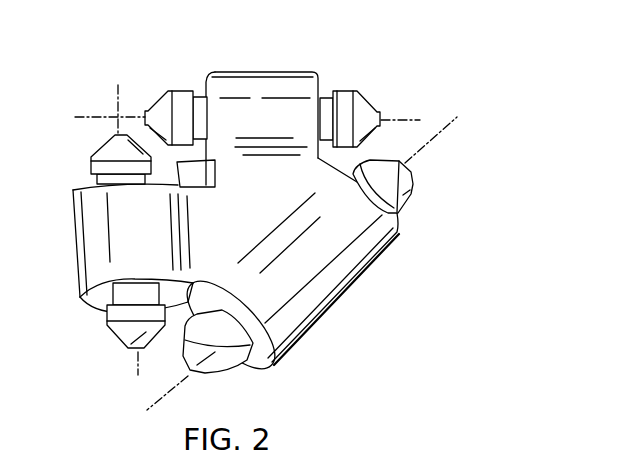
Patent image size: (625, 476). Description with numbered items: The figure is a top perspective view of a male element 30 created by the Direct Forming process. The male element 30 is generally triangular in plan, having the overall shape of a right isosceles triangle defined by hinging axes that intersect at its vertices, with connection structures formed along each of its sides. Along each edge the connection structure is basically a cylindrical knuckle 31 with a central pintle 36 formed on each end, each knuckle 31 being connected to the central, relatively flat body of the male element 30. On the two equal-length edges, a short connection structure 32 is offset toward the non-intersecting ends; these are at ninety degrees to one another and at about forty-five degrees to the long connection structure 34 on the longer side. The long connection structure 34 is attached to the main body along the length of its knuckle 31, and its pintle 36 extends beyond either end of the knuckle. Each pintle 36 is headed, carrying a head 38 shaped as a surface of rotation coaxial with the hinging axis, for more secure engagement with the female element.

The male element 30 is at (286, 226).
The cylindrical knuckle 31 is at (285, 78).
The short connection structure 32 is at (75, 249).
The long connection structure 34 is at (317, 323).
The pintle 36 is at (362, 92).
The head 38 is at (345, 100).